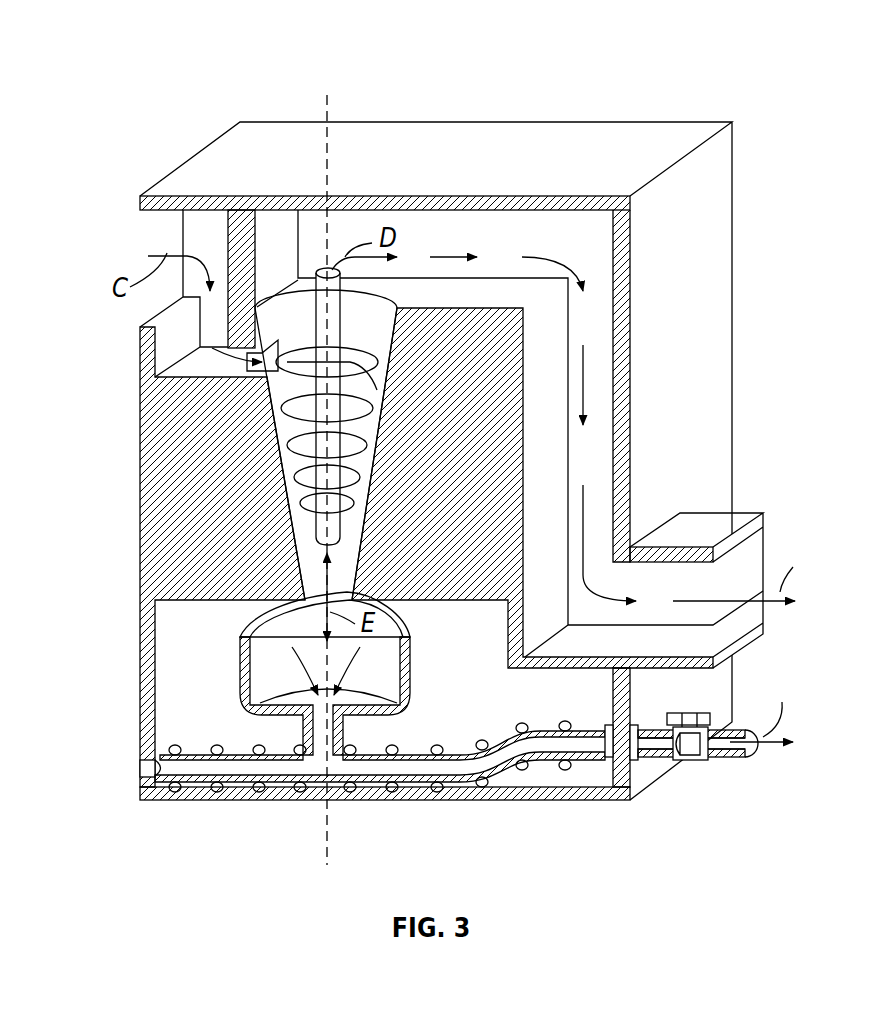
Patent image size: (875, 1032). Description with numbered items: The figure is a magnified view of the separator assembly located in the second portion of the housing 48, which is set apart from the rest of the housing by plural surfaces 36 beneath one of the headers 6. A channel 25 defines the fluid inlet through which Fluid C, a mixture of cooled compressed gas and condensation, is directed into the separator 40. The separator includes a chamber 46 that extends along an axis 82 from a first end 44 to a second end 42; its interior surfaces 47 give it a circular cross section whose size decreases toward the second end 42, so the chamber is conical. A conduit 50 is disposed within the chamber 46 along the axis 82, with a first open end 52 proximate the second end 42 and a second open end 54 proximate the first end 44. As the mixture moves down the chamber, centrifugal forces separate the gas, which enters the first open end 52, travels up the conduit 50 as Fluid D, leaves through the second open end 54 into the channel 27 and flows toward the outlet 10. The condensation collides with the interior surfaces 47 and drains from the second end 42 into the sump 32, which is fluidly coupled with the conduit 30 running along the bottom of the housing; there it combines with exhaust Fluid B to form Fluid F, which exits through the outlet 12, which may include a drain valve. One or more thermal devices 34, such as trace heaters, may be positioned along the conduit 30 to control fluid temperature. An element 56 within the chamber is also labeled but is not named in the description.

The second portion of the housing 48 is at (597, 49).
The header 6 is at (505, 140).
The channel 27 is at (582, 240).
The channel 25 is at (167, 233).
The conduit 50 is at (327, 317).
The second open end of the conduit 54 is at (322, 268).
The first end of the chamber 44 is at (399, 306).
The interior surface of the chamber 47 is at (383, 360).
The separator 40 is at (292, 428).
The chamber 46 is at (300, 493).
The vortex flow 56 is at (285, 392).
The first open end of the conduit 52 is at (322, 556).
The plural surfaces 36 is at (136, 515).
The outlet 10 is at (740, 521).
The conduit 30 is at (238, 797).
The second end of the chamber 42 is at (240, 640).
The sump 32 is at (407, 673).
The thermal device 34 is at (563, 763).
The outlet 12 is at (697, 760).
The axis 82 is at (323, 853).